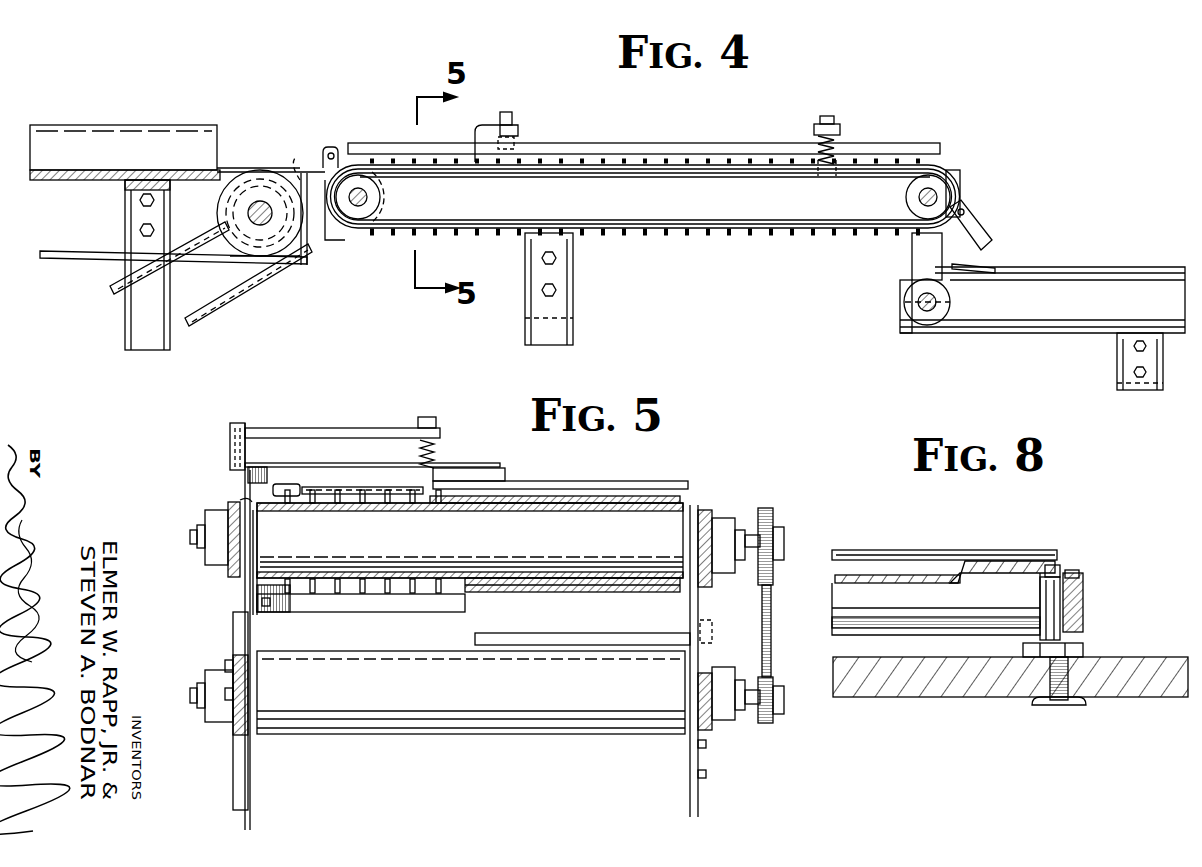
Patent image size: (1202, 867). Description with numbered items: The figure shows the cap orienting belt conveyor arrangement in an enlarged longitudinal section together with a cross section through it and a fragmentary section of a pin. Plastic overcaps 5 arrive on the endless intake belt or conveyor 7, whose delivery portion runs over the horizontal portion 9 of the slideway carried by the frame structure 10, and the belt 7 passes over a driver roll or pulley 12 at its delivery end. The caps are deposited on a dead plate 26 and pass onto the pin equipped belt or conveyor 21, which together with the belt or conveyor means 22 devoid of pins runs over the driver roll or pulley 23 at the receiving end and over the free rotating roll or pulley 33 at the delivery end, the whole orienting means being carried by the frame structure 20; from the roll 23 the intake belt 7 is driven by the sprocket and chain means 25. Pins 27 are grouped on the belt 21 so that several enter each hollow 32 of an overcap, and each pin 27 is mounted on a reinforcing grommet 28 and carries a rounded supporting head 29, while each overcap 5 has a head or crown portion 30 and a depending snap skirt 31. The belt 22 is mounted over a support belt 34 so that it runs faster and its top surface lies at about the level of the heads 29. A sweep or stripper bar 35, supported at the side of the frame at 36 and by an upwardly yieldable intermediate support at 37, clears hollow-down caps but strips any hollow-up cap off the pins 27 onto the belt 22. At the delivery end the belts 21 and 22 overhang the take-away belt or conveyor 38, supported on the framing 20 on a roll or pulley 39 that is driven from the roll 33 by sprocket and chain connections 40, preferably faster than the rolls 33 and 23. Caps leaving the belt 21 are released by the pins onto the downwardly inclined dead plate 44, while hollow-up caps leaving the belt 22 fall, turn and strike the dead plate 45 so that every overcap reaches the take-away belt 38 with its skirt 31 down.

In FIG. 5, the plastic overcap 5 is at (335, 481).
In FIG. 8, the plastic overcap 5 is at (902, 548).
In FIG. 4, the endless intake belt or conveyor 7 is at (233, 168).
In FIG. 4, the horizontal portion of the slideway 9 is at (60, 180).
In FIG. 4, the frame structure 10 is at (126, 322).
In FIG. 4, the driver roll or pulley 12 is at (250, 250).
In FIG. 4, the frame structure 20 is at (548, 310).
In FIG. 5, the frame structure 20 is at (230, 587).
In FIG. 5, the pin equipped belt or conveyor 21 is at (262, 497).
In FIG. 8, the pin equipped belt or conveyor 21 is at (1156, 661).
In FIG. 4, the belt or conveyor means devoid of pins 22 is at (692, 225).
In FIG. 5, the belt or conveyor means devoid of pins 22 is at (680, 502).
In FIG. 4, the driver roll or pulley 23 is at (358, 238).
In FIG. 4, the sprocket and chain means 25 is at (298, 175).
In FIG. 4, the dead plate 26 is at (316, 166).
In FIG. 4, the pins 27 is at (744, 160).
In FIG. 5, the pins 27 is at (398, 605).
In FIG. 8, the pins 27 is at (1062, 604).
In FIG. 8, the reinforcing grommet 28 is at (1070, 685).
In FIG. 8, the rounded supporting head 29 is at (1062, 570).
In FIG. 8, the head or crown portion 30 is at (986, 576).
In FIG. 8, the depending snap skirt 31 is at (1080, 582).
In FIG. 8, the hollow 32 is at (1012, 586).
In FIG. 4, the free rotating roll or pulley 33 is at (940, 184).
In FIG. 5, the free rotating roll or pulley 33 is at (630, 523).
In FIG. 4, the support belt 34 is at (724, 220).
In FIG. 5, the support belt 34 is at (536, 574).
In FIG. 4, the sweep or stripper bar 35 is at (608, 159).
In FIG. 5, the sweep or stripper bar 35 is at (398, 418).
In FIG. 4, the side support of the sweep bar 36 is at (506, 112).
In FIG. 5, the side support of the sweep bar 36 is at (238, 420).
In FIG. 4, the upwardly yieldable intermediate support 37 is at (840, 140).
In FIG. 5, the upwardly yieldable intermediate support 37 is at (436, 416).
In FIG. 4, the take-away belt or conveyor 38 is at (1084, 270).
In FIG. 5, the take-away belt or conveyor 38 is at (475, 738).
In FIG. 4, the roll or pulley 39 is at (925, 324).
In FIG. 5, the roll or pulley 39 is at (498, 662).
In FIG. 5, the sprocket and chain connections 40 is at (766, 608).
In FIG. 4, the downwardly inclined dead plate 44 is at (976, 240).
In FIG. 5, the downwardly inclined dead plate 44 is at (310, 600).
In FIG. 4, the dead plate 45 is at (982, 268).
In FIG. 5, the dead plate 45 is at (612, 633).